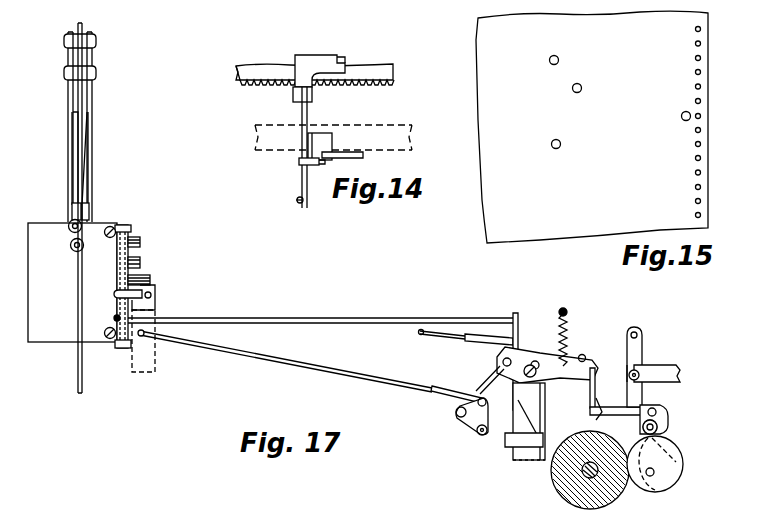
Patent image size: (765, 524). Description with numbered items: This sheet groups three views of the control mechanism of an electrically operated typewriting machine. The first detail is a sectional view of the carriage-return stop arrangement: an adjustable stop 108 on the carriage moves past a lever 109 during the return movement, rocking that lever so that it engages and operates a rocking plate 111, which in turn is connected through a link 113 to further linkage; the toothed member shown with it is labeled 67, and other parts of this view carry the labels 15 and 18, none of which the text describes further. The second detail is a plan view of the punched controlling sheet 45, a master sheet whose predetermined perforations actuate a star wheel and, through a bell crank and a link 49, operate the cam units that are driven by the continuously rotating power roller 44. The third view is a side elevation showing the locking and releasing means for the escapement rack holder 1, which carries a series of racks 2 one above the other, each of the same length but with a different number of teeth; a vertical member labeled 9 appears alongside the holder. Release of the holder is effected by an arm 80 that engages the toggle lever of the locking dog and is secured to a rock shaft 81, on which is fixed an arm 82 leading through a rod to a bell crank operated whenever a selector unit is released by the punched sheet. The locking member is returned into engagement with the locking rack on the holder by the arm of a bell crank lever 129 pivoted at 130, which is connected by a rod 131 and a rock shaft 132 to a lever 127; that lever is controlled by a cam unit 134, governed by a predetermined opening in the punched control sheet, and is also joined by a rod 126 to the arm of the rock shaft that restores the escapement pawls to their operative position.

In FIG. 17, the escapement rack holder 1 is at (34, 291).
In FIG. 17, the racks 2 is at (140, 262).
In FIG. 17, the vertical rod 9 is at (78, 380).
In FIG. 17, the bracket plate 15 is at (128, 228).
In FIG. 17, the dashed plate 18 is at (121, 348).
In FIG. 17, the power roller 44 is at (556, 490).
In FIG. 15, the punched controlling sheet 45 is at (680, 70).
In FIG. 17, the link 49 is at (666, 366).
In FIG. 14, the toothed rack 67 is at (252, 70).
In FIG. 17, the arm 80 is at (117, 340).
In FIG. 17, the rock shaft 81 is at (268, 314).
In FIG. 17, the arm 82 is at (518, 328).
In FIG. 14, the adjustable stop 108 is at (320, 57).
In FIG. 14, the lever 109 is at (300, 97).
In FIG. 14, the rocking plate 111 is at (302, 163).
In FIG. 14, the link 113 is at (355, 153).
In FIG. 17, the rod 126 is at (433, 340).
In FIG. 17, the lever 127 is at (556, 373).
In FIG. 17, the bell crank lever 129 is at (115, 295).
In FIG. 17, the pivot 130 is at (151, 294).
In FIG. 17, the rod 131 is at (292, 374).
In FIG. 17, the rock shaft 132 is at (478, 436).
In FIG. 17, the cam unit 134 is at (672, 482).